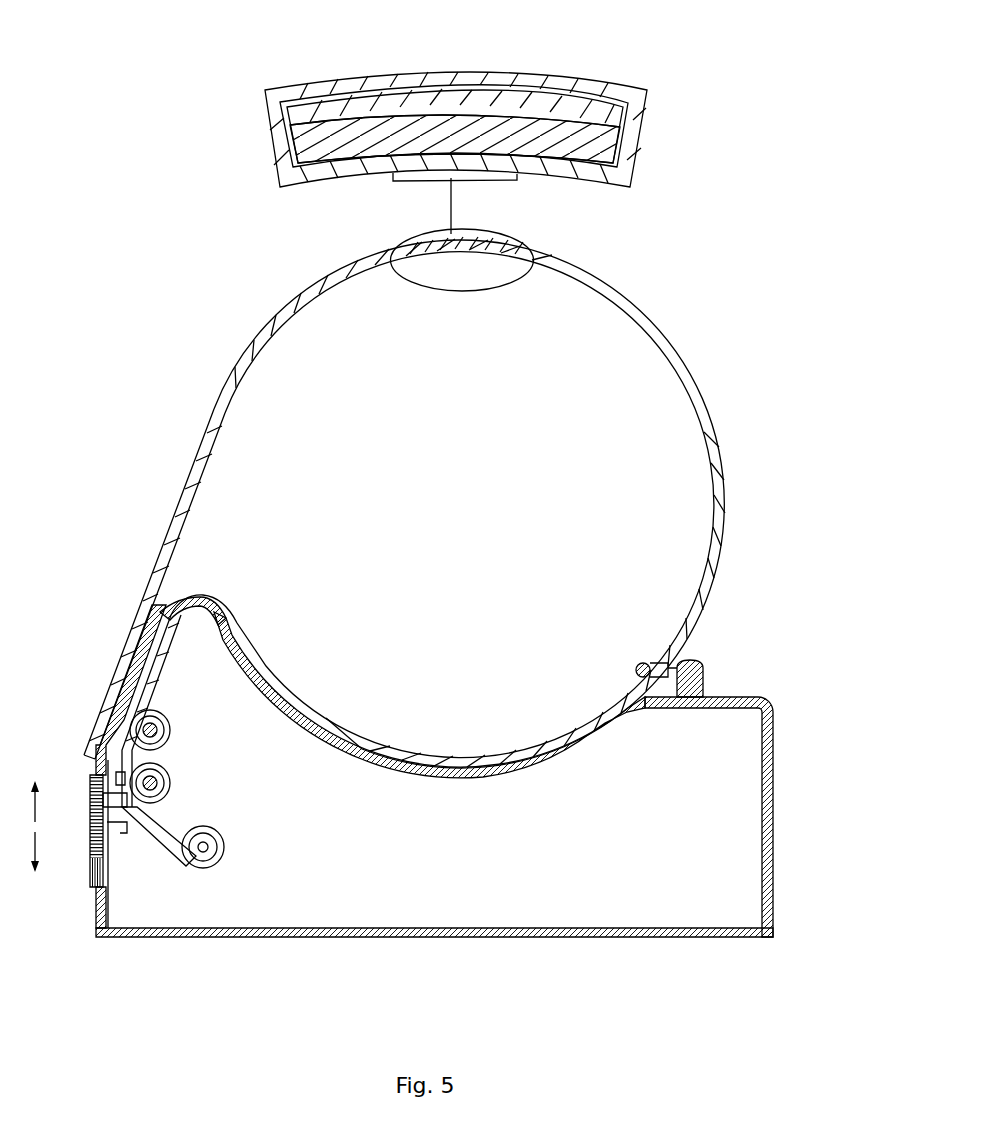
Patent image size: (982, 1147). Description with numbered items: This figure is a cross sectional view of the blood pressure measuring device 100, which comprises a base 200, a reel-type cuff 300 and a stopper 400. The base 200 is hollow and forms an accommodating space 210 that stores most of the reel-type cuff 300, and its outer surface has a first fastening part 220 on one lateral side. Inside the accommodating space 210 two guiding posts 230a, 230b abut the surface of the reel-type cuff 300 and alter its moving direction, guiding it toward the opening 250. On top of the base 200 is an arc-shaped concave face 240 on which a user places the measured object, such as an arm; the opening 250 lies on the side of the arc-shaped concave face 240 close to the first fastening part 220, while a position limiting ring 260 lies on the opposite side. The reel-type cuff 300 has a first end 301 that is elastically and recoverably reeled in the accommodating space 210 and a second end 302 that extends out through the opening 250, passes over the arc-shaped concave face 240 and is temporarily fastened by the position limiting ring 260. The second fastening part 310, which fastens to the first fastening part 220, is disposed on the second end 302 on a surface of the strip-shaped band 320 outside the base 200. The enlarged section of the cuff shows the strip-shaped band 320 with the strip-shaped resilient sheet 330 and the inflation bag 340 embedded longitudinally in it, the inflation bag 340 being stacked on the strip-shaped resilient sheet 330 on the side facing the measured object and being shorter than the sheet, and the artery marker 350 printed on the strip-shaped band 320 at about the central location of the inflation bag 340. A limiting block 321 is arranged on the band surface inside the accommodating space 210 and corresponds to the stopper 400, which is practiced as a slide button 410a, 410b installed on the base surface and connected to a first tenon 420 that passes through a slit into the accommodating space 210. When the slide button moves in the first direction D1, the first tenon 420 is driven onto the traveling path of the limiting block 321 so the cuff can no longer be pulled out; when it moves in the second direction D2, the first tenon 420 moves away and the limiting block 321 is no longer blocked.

The blood pressure measuring device 100 is at (794, 272).
The base 200 is at (778, 735).
The accommodating space 210 is at (655, 906).
The first fastening part 220 is at (102, 712).
The guiding post 230a is at (168, 730).
The guiding post 230b is at (168, 781).
The arc-shaped concave face 240 is at (443, 722).
The opening 250 is at (190, 600).
The position limiting ring 260 is at (638, 664).
The reel-type cuff 300 is at (620, 84).
The first end 301 is at (225, 847).
The second end 302 is at (130, 642).
The second fastening part 310 is at (118, 678).
The strip-shaped band 320 is at (497, 82).
The strip-shaped resilient sheet 330 is at (618, 116).
The inflation bag 340 is at (612, 145).
The artery marker 350 is at (490, 178).
The limiting block 321 is at (145, 838).
The stopper 400 is at (86, 825).
The slide button 410a is at (97, 888).
The slide button 410b is at (97, 778).
The first tenon 420 is at (112, 825).
The first direction D1 is at (37, 786).
The second direction D2 is at (37, 868).